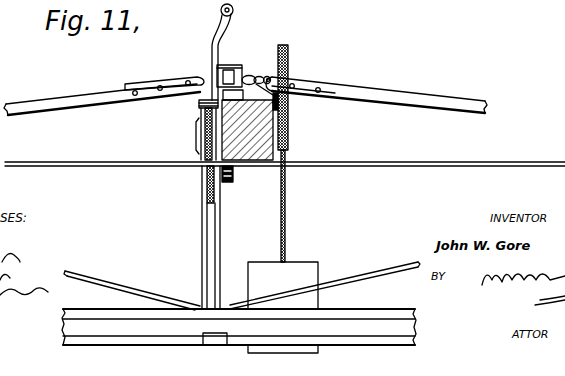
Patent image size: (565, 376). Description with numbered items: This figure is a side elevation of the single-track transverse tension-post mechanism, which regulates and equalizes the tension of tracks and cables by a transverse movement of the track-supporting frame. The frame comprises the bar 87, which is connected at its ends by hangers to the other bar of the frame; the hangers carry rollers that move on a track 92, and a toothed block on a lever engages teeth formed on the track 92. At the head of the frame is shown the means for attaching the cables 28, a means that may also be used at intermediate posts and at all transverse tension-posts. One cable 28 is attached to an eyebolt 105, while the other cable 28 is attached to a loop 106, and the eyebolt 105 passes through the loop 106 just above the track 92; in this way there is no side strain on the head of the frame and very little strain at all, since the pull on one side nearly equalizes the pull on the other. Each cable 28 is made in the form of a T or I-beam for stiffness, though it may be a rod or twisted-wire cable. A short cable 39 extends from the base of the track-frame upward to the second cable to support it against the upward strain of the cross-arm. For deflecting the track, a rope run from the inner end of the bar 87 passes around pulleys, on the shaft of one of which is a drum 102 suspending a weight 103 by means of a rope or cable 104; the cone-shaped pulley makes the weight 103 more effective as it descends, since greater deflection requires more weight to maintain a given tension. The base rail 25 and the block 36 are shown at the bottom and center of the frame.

The cable 28 is at (96, 97).
The loop 106 is at (207, 77).
The eyebolt 105 is at (255, 64).
The track 92 is at (289, 78).
The drum 102 is at (289, 145).
The hatched block 36 is at (265, 159).
The rope or cable 104 is at (286, 233).
The weight 103 is at (302, 263).
The bar 87 is at (201, 245).
The short cable 39 is at (368, 270).
The rail 25 is at (403, 298).